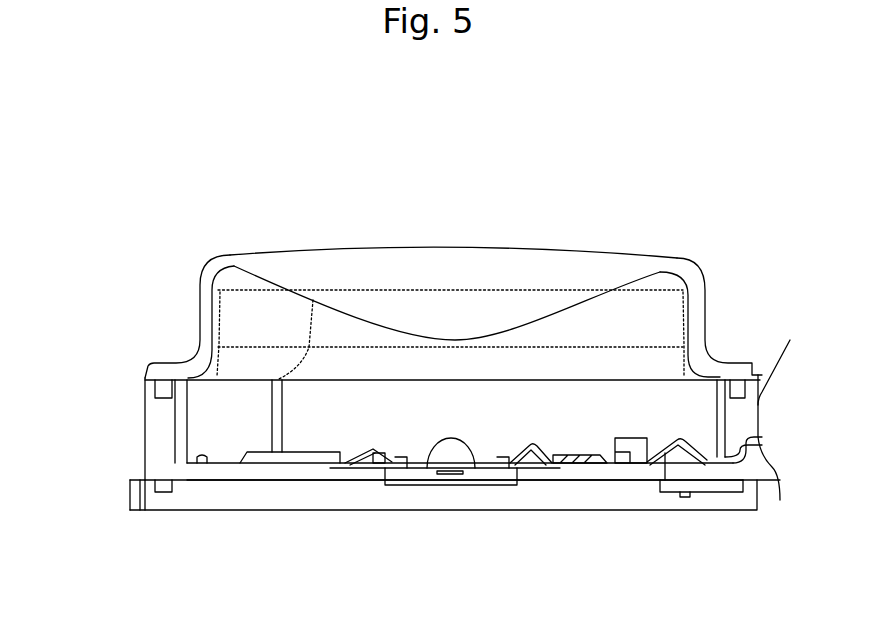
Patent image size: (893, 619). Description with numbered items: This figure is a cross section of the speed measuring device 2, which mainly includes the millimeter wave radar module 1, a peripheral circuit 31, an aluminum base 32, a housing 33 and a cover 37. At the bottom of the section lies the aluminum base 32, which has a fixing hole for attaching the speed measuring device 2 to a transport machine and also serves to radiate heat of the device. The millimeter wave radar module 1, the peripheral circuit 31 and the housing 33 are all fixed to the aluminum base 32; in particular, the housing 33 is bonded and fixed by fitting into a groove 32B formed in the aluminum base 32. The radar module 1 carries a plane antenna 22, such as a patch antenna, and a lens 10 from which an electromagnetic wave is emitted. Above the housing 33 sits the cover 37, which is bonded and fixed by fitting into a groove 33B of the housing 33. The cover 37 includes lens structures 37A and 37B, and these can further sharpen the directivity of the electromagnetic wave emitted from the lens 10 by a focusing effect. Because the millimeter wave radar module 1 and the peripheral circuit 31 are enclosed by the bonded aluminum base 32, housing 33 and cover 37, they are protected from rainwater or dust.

The millimeter wave radar module 1 is at (507, 480).
The speed measuring device 2 is at (117, 136).
The lens 10 is at (399, 478).
The plane antenna 22 is at (453, 477).
The peripheral circuit 31 is at (305, 476).
The aluminum base 32 is at (223, 503).
The groove of aluminum base 32B is at (162, 500).
The housing 33 is at (155, 445).
The groove of housing 33B is at (163, 410).
The cover 37 is at (675, 258).
The lens structure 37A is at (432, 247).
The lens structure 37B is at (401, 315).